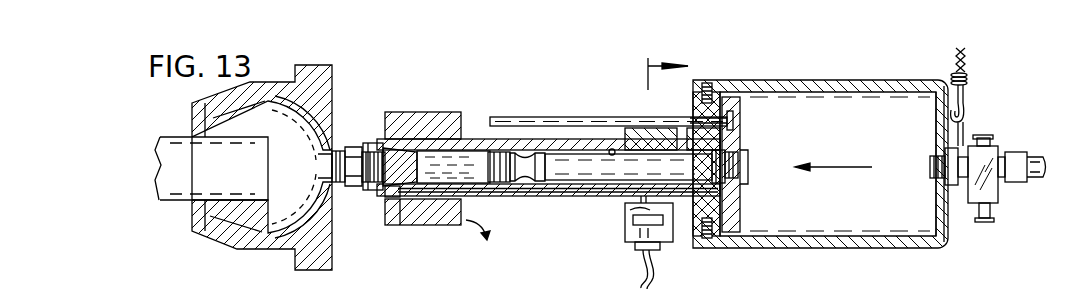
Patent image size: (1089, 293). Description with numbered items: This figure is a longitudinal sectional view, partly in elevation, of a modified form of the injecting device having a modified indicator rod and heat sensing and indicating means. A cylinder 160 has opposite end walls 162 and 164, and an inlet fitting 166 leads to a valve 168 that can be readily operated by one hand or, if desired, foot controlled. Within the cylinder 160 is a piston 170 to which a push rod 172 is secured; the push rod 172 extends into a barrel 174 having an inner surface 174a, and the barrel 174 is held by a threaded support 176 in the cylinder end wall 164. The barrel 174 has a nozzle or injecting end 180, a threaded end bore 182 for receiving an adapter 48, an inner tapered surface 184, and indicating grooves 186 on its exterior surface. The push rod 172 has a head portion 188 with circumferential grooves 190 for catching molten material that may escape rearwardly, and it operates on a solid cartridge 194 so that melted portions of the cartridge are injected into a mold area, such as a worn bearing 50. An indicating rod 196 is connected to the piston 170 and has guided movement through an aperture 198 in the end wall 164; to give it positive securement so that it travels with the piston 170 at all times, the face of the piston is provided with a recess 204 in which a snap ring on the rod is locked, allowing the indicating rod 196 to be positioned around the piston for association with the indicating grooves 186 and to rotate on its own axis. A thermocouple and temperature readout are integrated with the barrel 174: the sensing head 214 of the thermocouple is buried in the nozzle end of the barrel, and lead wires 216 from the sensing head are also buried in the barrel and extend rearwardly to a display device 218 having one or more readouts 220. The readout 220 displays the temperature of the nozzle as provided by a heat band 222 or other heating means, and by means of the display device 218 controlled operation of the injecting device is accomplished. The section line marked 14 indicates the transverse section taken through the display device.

The section line 14- 14 is at (657, 69).
The adapter 48 is at (340, 151).
The worn bearing 50 is at (343, 68).
The cylinder 160 is at (846, 80).
The end wall 162 is at (950, 228).
The end wall 164 is at (700, 238).
The inlet fitting 166 is at (1016, 152).
The valve 168 is at (984, 135).
The piston 170 is at (742, 205).
The push rod 172 is at (590, 190).
The barrel 174 is at (542, 196).
The inner surface 174a is at (612, 149).
The threaded support 176 is at (744, 140).
The nozzle or injecting end 180 is at (372, 143).
The threaded end bore 182 is at (386, 196).
The inner tapered surface 184 is at (394, 150).
The indicating grooves 186 is at (576, 139).
The head portion 188 is at (522, 152).
The circumferential grooves 190 is at (498, 152).
The solid cartridge 194 is at (492, 183).
The indicating rod 196 is at (585, 117).
The aperture 198 is at (700, 100).
The recess 204 is at (735, 120).
The sensing head 214 is at (404, 225).
The lead wires 216 is at (450, 225).
The display device 218 is at (638, 250).
The readout 220 is at (630, 224).
The heat band 222 is at (439, 112).